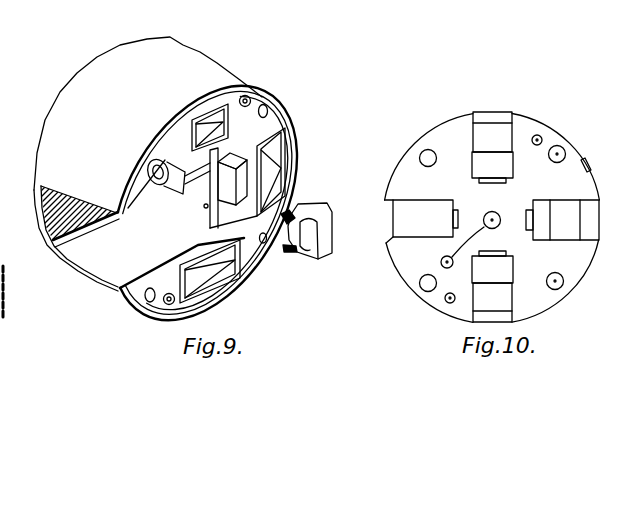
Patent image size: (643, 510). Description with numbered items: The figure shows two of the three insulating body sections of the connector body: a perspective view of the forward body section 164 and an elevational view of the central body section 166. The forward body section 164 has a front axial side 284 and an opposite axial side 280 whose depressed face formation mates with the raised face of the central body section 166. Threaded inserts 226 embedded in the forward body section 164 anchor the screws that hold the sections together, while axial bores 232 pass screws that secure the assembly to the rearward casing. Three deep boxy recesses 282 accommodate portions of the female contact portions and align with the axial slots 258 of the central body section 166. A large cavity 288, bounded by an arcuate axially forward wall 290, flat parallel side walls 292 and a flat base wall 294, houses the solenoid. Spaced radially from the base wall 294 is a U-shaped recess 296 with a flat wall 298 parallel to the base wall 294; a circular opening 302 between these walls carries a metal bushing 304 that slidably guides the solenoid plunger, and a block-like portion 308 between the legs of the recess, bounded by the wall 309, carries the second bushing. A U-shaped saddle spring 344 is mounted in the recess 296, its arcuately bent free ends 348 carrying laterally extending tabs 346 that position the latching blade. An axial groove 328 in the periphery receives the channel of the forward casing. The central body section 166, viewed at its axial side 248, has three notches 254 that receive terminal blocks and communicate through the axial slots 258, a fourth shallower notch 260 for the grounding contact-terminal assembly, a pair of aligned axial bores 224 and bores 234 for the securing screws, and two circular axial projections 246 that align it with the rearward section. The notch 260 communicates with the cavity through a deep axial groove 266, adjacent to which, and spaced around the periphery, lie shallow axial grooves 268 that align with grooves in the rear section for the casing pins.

In FIG. 9, the forward body section 164 is at (181, 56).
In FIG. 9, the front axial side 284 is at (94, 73).
In FIG. 9, the axial side 280 is at (289, 131).
In FIG. 9, the threaded inserts 226 is at (242, 95).
In FIG. 9, the axial bores 232 is at (262, 106).
In FIG. 9, the boxy recesses 282 is at (211, 117).
In FIG. 9, the U-shaped recess 296 is at (244, 150).
In FIG. 9, the wall 309 is at (214, 178).
In FIG. 9, the circular opening 302 is at (156, 184).
In FIG. 9, the metal bushing 304 is at (167, 186).
In FIG. 9, the flat wall 298 is at (179, 213).
In FIG. 9, the base wall 294 is at (182, 215).
In FIG. 9, the cavity 288 is at (120, 205).
In FIG. 9, the arcuate axially forward wall 290 is at (64, 189).
In FIG. 9, the side walls 292 is at (114, 230).
In FIG. 9, the block-like portion 308 is at (237, 192).
In FIG. 9, the arcuately bent free ends 348 is at (332, 199).
In FIG. 9, the saddle spring 344 is at (332, 221).
In FIG. 9, the tabs 346 is at (268, 242).
In FIG. 9, the axial groove 328 is at (267, 266).
In FIG. 10, the central body section 166 is at (443, 131).
In FIG. 10, the axial side 248 is at (410, 168).
In FIG. 10, the notches 254 is at (492, 133).
In FIG. 10, the axial bores 224 is at (541, 137).
In FIG. 10, the axial bores 234 is at (432, 163).
In FIG. 10, the shallow axial grooves 268 is at (387, 244).
In FIG. 10, the fourth notch 260 is at (415, 213).
In FIG. 10, the axial slots 258 is at (507, 260).
In FIG. 10, the circular axial projections 246 is at (466, 244).
In FIG. 10, the deep axial groove 266 is at (393, 222).